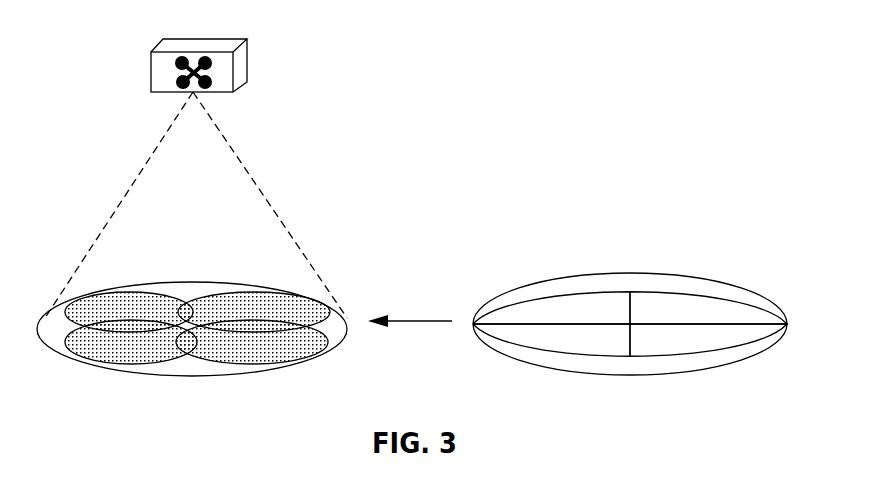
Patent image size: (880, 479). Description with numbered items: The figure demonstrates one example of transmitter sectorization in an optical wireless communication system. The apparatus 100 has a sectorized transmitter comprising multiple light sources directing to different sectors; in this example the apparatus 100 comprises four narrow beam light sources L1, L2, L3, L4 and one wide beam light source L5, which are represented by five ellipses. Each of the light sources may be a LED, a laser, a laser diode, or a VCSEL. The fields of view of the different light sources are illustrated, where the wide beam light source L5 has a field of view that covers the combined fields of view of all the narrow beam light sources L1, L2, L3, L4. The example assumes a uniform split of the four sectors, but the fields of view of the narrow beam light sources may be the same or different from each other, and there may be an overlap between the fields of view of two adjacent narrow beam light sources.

The apparatus 100 is at (250, 68).
The narrow beam light source L1 is at (551, 308).
The narrow beam light source L2 is at (708, 308).
The narrow beam light source L3 is at (551, 340).
The narrow beam light source L4 is at (708, 340).
The wide beam light source L5 is at (630, 324).